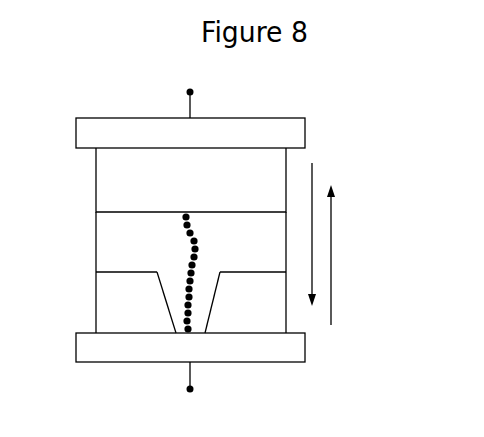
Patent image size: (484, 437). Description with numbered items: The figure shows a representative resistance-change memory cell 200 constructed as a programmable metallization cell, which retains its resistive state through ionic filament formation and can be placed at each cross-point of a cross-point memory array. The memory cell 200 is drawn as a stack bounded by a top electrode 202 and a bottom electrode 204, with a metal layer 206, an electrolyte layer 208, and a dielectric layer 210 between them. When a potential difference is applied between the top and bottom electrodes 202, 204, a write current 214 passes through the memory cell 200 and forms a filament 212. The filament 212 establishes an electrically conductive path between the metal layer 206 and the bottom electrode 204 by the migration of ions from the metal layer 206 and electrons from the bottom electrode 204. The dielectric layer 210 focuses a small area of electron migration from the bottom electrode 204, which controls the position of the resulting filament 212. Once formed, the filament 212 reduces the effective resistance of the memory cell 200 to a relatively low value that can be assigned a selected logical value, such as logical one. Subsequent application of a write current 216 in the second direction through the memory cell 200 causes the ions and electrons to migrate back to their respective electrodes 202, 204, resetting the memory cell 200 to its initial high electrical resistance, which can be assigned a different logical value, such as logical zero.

The resistance-change memory cell 200 is at (136, 99).
The top electrode 202 is at (76, 128).
The bottom electrode 204 is at (76, 352).
The metal layer 206 is at (96, 190).
The electrolyte layer 208 is at (96, 243).
The dielectric layer 210 is at (96, 304).
The filament 212 is at (197, 238).
The write current 214 is at (313, 176).
The write current 216 is at (332, 285).